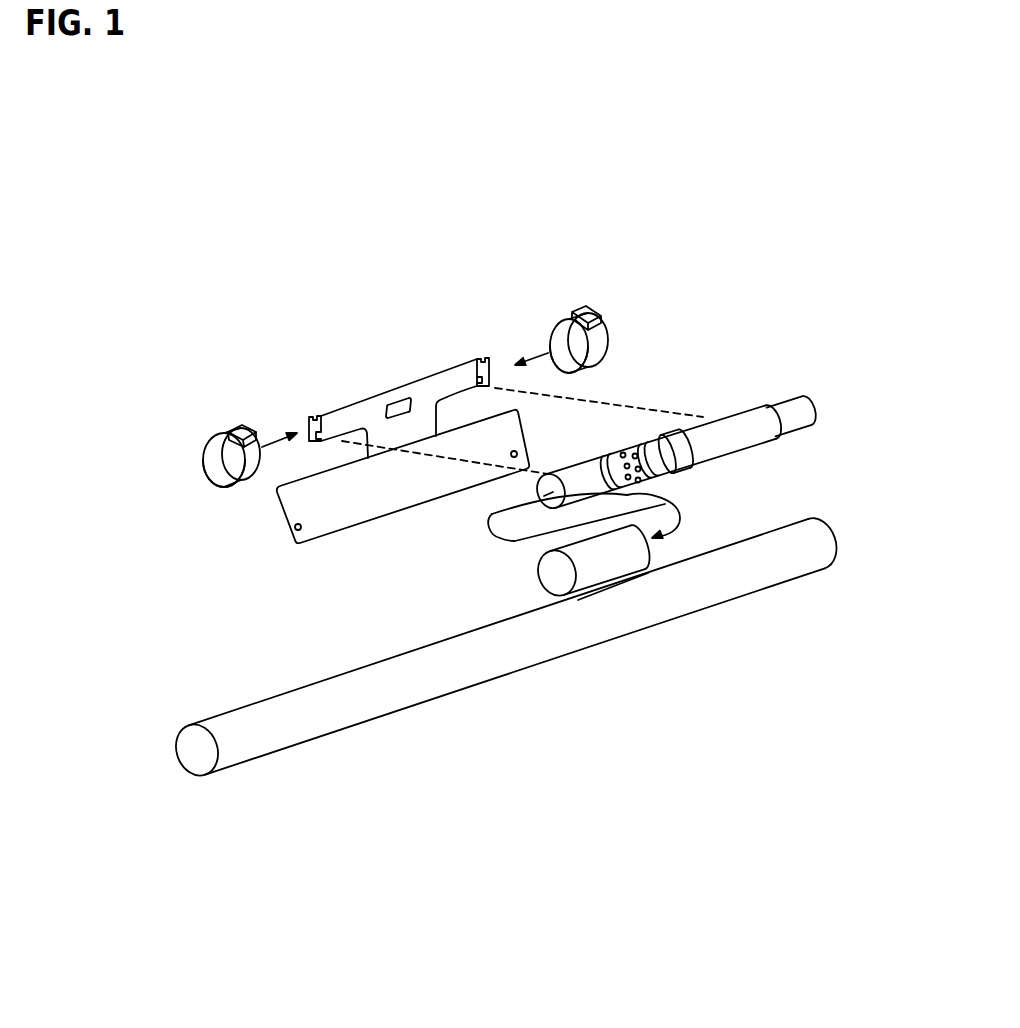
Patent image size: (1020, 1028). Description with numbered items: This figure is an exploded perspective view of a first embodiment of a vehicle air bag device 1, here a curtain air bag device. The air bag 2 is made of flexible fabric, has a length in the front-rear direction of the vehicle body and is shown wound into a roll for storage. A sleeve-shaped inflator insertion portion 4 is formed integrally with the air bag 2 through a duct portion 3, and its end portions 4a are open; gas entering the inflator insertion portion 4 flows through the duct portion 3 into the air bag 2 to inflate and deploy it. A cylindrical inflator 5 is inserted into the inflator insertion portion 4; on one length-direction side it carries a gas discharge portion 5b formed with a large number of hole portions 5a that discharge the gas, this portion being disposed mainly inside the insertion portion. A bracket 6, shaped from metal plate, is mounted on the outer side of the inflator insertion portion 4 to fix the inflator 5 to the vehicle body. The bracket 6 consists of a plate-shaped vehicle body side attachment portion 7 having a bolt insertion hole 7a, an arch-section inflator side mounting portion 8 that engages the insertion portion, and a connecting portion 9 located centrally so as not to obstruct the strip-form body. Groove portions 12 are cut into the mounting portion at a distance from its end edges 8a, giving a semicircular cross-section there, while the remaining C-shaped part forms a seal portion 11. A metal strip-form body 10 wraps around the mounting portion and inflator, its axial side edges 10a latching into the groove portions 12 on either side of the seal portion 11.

The vehicle air bag device 1 is at (778, 320).
The air bag 2 is at (318, 753).
The duct portion 3 is at (613, 580).
The inflator insertion portion 4 is at (630, 557).
The end portions 4a is at (538, 575).
The inflator 5 is at (728, 398).
The hole portions 5a is at (628, 450).
The gas discharge portion 5b is at (627, 483).
The bracket 6 is at (251, 524).
The vehicle body side attachment portion 7 is at (415, 495).
The bolt insertion hole 7a is at (300, 530).
The inflator side mounting portion 8 is at (393, 362).
The end edges 8a is at (306, 424).
The connecting portion 9 is at (423, 425).
The strip-form body 10 is at (200, 477).
The axial side edges 10a is at (608, 340).
The seal portion 11 is at (312, 417).
The groove portions 12 is at (315, 415).